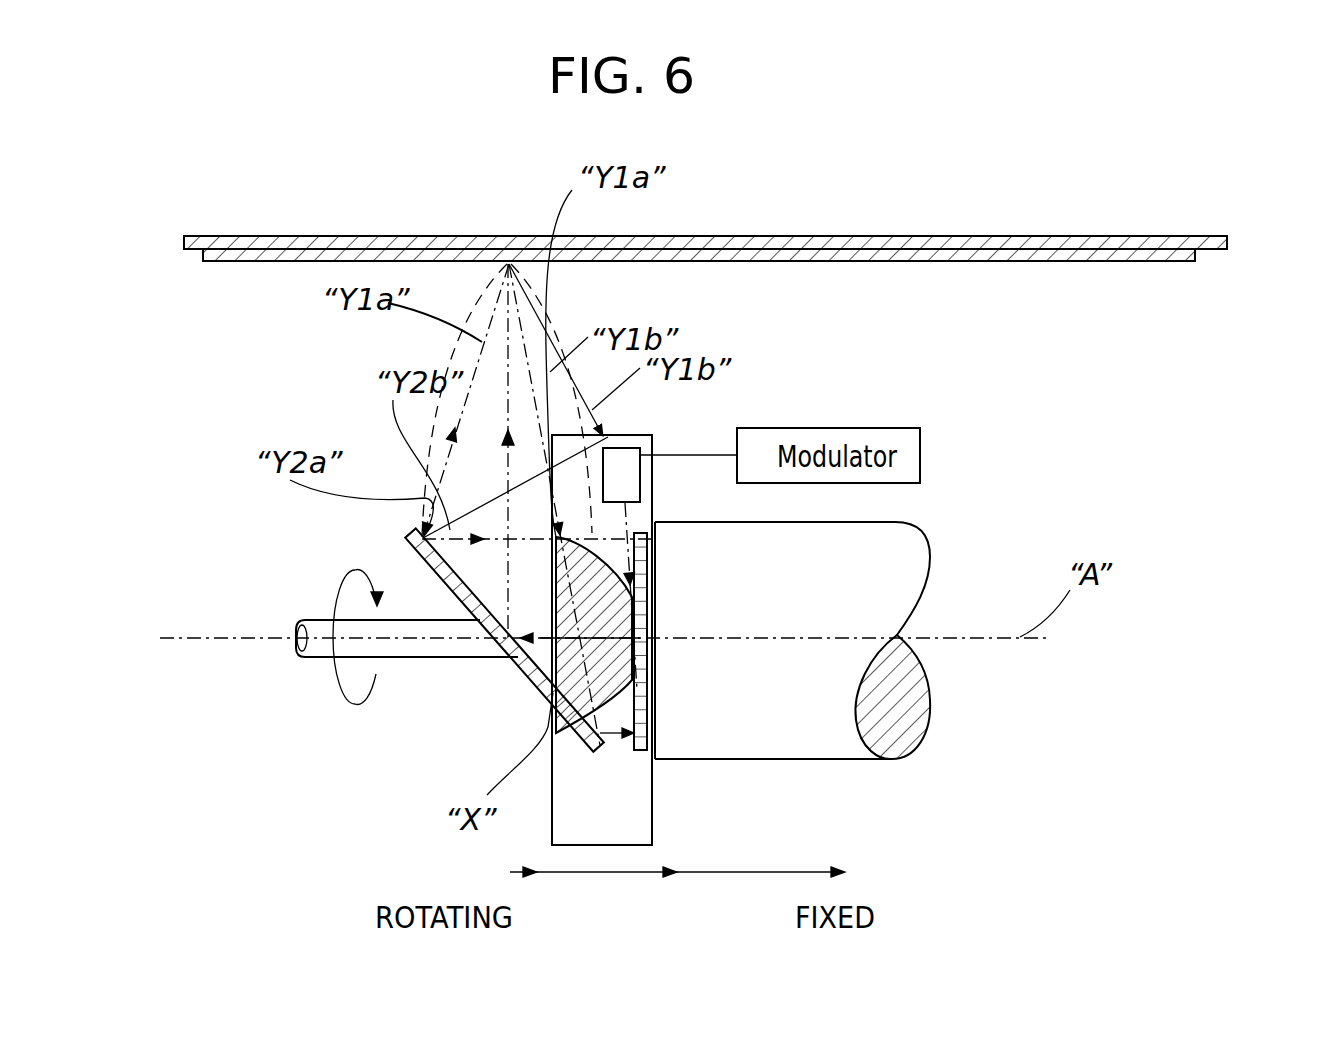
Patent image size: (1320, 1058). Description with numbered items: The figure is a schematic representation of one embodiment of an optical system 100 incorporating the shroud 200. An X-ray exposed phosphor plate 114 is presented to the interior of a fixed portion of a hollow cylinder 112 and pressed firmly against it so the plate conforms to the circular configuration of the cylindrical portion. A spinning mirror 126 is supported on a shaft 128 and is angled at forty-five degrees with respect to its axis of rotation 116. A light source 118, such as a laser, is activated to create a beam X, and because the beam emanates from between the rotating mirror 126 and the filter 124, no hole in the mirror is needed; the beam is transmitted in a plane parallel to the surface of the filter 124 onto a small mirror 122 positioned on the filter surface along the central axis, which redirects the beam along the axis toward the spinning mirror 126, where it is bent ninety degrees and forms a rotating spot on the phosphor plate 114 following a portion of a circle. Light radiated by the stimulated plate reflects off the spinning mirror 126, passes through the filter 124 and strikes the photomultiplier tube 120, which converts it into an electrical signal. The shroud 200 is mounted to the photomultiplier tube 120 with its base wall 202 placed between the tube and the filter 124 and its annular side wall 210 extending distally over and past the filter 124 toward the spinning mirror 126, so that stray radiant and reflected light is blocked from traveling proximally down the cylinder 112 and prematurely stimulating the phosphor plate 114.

The optical system 100 is at (968, 203).
The hollow cylinder 112 is at (1200, 233).
The phosphor plate 114 is at (586, 262).
The axis of rotation 116 is at (243, 642).
The light source 118 is at (622, 436).
The photomultiplier tube 120 is at (769, 608).
The small mirror 122 is at (641, 678).
The filter 124 is at (642, 530).
The spinning mirror 126 is at (540, 652).
The shaft 128 is at (447, 659).
The shroud 200 is at (652, 808).
The base wall 202 is at (653, 780).
The annular side wall 210 is at (640, 857).